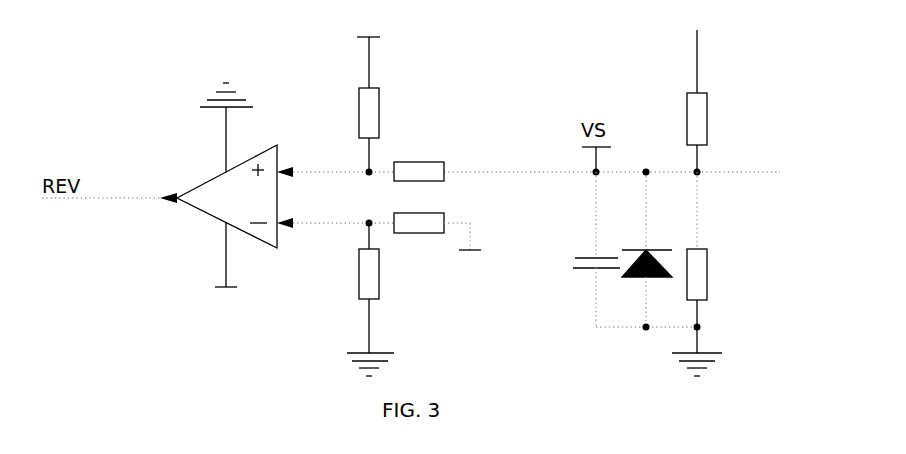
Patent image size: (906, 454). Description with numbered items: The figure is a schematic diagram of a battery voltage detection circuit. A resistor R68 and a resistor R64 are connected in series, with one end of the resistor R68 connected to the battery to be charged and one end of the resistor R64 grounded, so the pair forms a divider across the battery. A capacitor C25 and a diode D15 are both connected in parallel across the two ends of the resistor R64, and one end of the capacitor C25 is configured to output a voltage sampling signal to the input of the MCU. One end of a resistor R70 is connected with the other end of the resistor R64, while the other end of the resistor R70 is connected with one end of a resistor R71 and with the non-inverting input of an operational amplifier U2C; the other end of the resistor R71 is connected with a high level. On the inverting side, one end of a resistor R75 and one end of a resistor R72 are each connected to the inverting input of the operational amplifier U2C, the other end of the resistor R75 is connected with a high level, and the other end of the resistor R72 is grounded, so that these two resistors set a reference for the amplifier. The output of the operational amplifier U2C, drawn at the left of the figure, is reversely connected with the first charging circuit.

The operational amplifier U2C is at (248, 196).
The resistor R71 is at (383, 92).
The resistor R70 is at (419, 158).
The resistor R75 is at (449, 243).
The resistor R72 is at (355, 299).
The resistor R68 is at (726, 100).
The resistor R64 is at (710, 274).
The capacitor C25 is at (584, 249).
The diode D15 is at (637, 249).